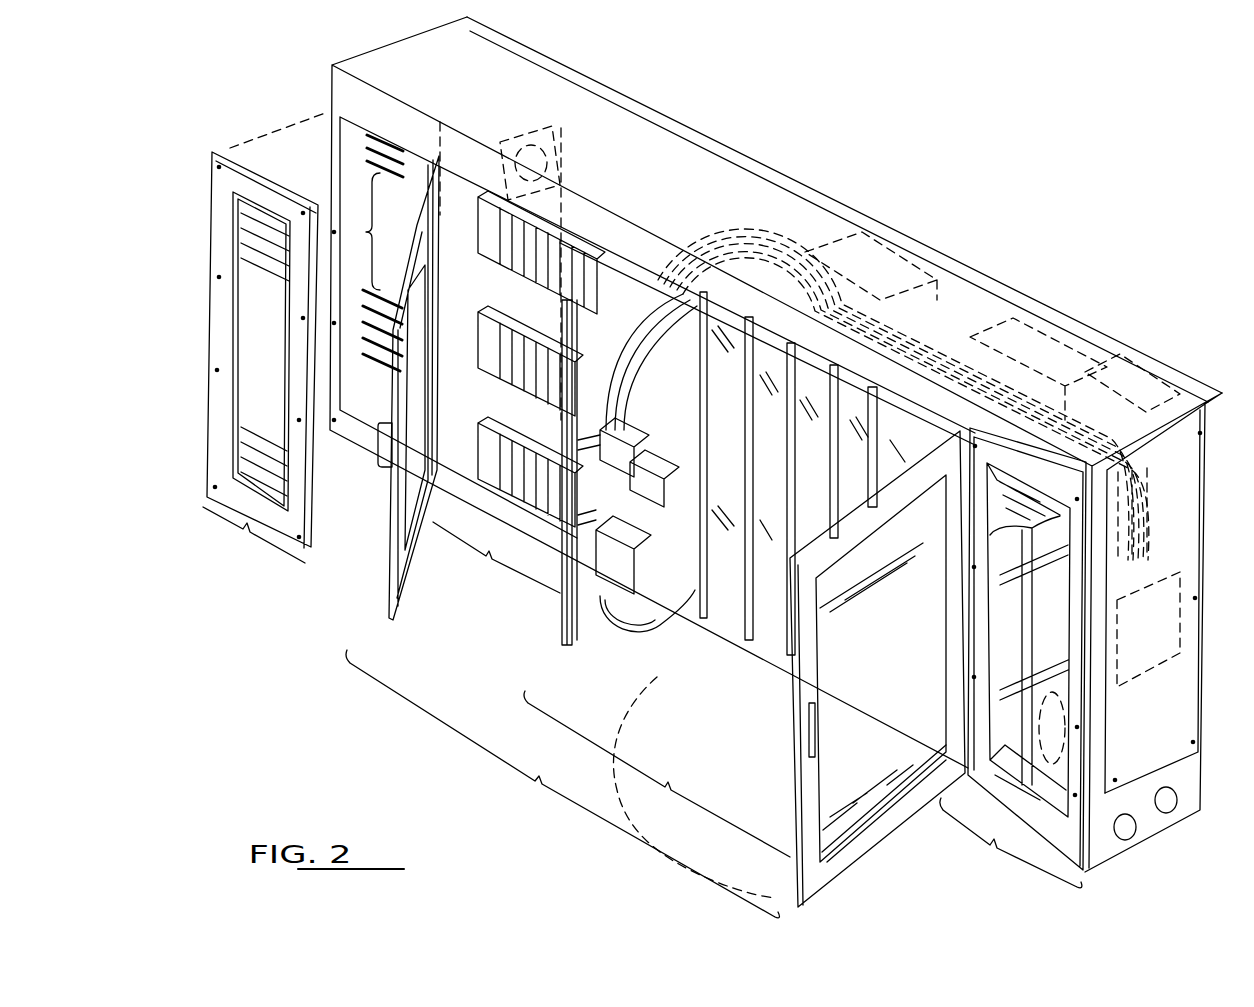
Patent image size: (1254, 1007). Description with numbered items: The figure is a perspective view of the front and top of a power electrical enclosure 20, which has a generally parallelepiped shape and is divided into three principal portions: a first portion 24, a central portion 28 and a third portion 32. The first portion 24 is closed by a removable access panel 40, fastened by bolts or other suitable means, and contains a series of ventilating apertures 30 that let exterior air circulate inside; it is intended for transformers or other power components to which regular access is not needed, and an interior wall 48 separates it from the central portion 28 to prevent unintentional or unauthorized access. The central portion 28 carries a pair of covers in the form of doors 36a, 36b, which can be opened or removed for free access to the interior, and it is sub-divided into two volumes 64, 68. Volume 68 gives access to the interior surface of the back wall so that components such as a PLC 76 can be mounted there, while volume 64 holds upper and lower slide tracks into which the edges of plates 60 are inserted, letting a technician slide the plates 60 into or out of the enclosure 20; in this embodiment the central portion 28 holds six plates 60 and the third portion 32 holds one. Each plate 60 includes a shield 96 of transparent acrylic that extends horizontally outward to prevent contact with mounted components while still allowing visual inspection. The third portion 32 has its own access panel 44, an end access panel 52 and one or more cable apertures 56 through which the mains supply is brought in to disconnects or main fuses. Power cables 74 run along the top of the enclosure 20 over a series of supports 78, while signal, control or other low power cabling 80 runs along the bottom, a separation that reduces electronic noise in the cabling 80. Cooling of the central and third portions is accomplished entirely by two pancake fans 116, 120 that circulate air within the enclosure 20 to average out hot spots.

The enclosure 20 is at (1022, 246).
The first portion 24 is at (254, 539).
The central portion 28 is at (562, 784).
The ventilating apertures 30 is at (372, 163).
The third portion 32 is at (1013, 658).
The door 36a is at (402, 578).
The door 36b is at (840, 862).
The access panel 40 is at (232, 176).
The access panel 44 is at (1060, 518).
The interior wall 48 is at (585, 75).
The end access panel 52 is at (1216, 672).
The cable apertures 56 is at (1177, 838).
The plates 60 is at (612, 285).
The volume 64 is at (657, 774).
The volume 68 is at (496, 557).
The power cables 74 is at (733, 236).
The PLC 76 is at (508, 300).
The supports 78 is at (892, 240).
The cabling 80 is at (655, 640).
The shield 96 is at (592, 640).
The pancake fan 116 is at (1060, 712).
The pancake fan 120 is at (565, 140).